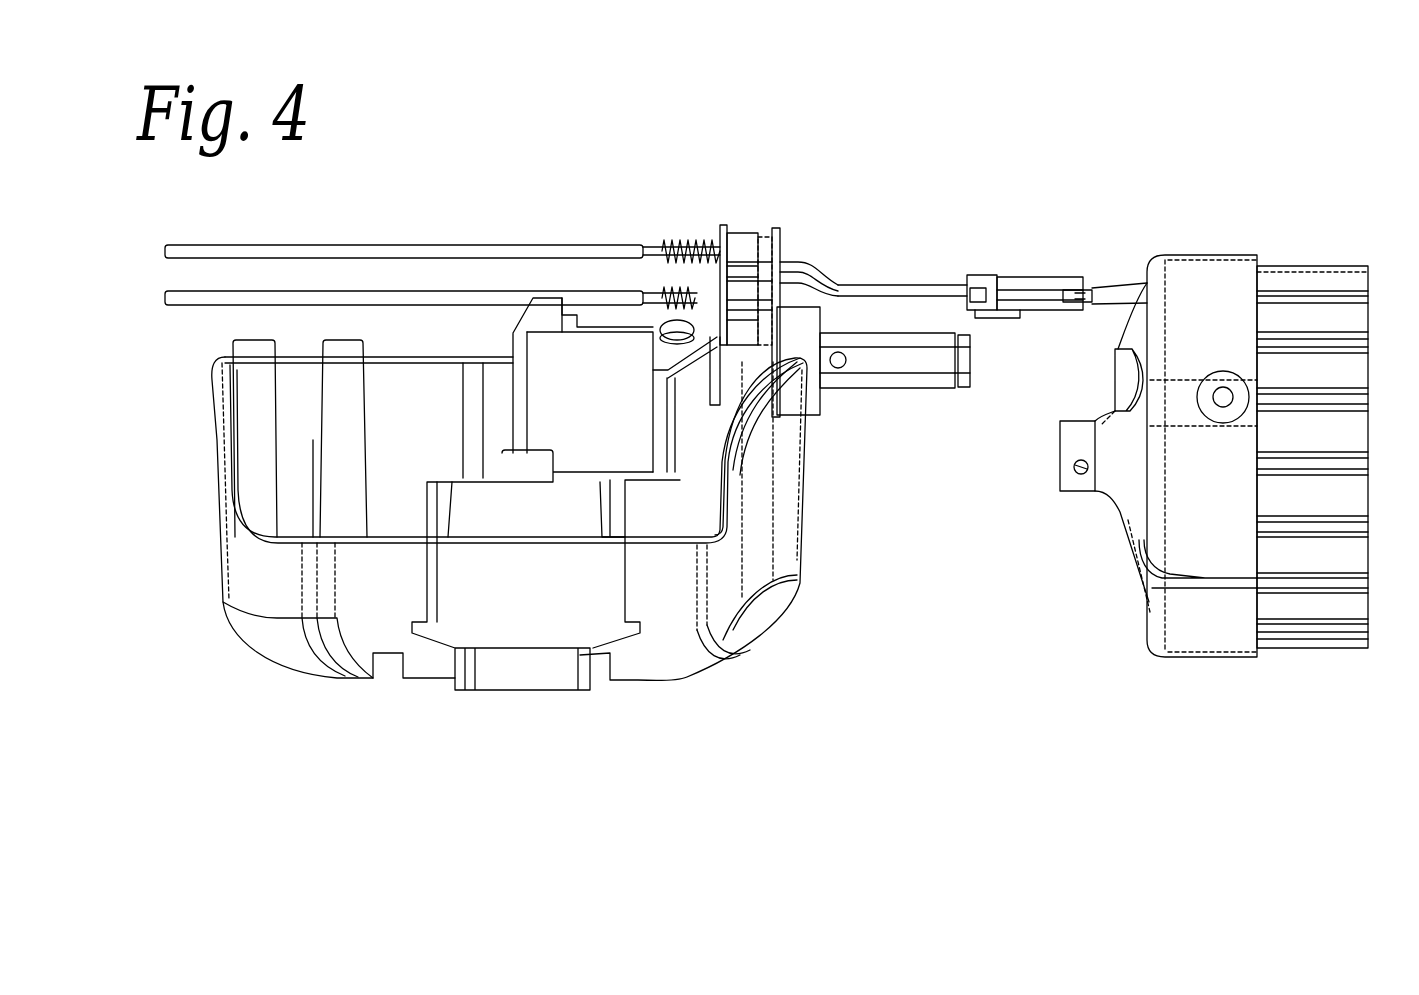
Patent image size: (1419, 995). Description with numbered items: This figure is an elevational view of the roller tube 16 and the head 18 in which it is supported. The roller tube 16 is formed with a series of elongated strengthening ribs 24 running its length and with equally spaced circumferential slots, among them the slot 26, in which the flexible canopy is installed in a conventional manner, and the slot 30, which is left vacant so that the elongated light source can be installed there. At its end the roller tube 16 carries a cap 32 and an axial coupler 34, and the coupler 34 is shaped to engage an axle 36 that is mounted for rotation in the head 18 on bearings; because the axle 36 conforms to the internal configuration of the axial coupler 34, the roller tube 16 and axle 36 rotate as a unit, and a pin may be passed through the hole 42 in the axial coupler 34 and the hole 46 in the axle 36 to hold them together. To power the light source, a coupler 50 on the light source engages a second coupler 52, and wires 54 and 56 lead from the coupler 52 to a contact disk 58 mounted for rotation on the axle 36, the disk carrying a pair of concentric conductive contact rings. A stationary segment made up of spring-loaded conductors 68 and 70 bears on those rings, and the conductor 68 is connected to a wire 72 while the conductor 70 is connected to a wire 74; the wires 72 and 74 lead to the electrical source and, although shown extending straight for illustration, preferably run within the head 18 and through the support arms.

The roller tube 16 is at (1308, 650).
The head 18 is at (783, 613).
The strengthening ribs 24 is at (1368, 463).
The circumferential slot 26 is at (1157, 582).
The circumferential slot 30 is at (1177, 258).
The cap 32 is at (1125, 523).
The axial coupler 34 is at (1090, 417).
The axle 36 is at (912, 388).
The hole 42 is at (1074, 471).
The hole 46 is at (838, 368).
The coupler 50 is at (1060, 277).
The second coupler 52 is at (1013, 277).
The wire 54 is at (802, 278).
The wire 56 is at (797, 262).
The contact disk 58 is at (773, 238).
The spring-loaded conductor 68 is at (765, 237).
The spring-loaded conductor 70 is at (780, 250).
The wire 72 is at (492, 247).
The wire 74 is at (445, 247).